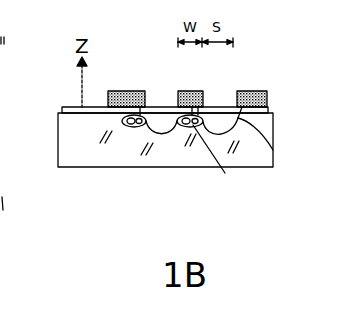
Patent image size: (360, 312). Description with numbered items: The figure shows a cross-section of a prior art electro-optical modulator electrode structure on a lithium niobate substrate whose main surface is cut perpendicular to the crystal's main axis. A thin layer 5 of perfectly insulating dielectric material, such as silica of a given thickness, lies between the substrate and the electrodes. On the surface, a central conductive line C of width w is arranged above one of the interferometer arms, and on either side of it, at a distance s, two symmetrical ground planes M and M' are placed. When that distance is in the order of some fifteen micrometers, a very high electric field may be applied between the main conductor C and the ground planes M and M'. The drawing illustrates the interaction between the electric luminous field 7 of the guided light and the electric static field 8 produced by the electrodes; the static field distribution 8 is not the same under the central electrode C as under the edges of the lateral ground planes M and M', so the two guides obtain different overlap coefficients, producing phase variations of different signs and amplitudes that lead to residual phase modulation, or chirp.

The thin layer 5 is at (62, 108).
The electric luminous field 7 is at (221, 160).
The electric static field 8 is at (273, 150).
The ground plane M is at (134, 85).
The conductive line C is at (191, 94).
The ground plane M' is at (271, 85).